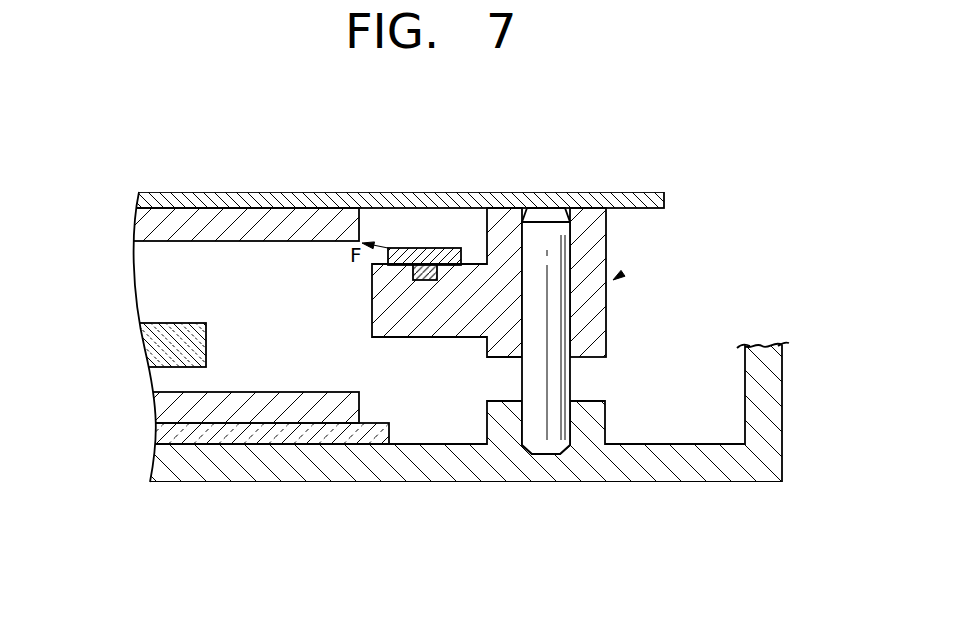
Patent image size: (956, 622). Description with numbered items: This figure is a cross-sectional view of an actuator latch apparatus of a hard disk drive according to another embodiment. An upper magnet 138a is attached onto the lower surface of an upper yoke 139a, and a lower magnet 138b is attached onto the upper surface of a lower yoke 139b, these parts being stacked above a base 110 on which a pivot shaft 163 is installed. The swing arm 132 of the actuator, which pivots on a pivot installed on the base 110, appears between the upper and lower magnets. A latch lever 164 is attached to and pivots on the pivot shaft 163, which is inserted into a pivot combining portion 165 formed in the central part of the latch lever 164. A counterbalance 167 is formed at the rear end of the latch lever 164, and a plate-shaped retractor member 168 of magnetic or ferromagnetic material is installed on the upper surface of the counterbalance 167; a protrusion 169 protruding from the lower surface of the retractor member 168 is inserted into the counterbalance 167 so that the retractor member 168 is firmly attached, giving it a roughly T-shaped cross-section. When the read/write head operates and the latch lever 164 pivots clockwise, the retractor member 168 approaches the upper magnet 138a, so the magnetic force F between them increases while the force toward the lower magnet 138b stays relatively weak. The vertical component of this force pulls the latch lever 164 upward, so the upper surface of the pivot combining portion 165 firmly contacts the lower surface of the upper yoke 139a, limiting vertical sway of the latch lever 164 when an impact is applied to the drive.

The upper yoke 139a is at (150, 200).
The upper magnet 138a is at (143, 225).
The swing arm 132 is at (150, 347).
The lower magnet 138b is at (160, 404).
The lower yoke 139b is at (160, 433).
The base 110 is at (172, 465).
The latch lever 164 is at (621, 275).
The pivot combining portion 165 is at (590, 308).
The pivot shaft 163 is at (545, 454).
The counterbalance 167 is at (429, 328).
The retractor member 168 is at (411, 248).
The protrusion 169 is at (430, 272).